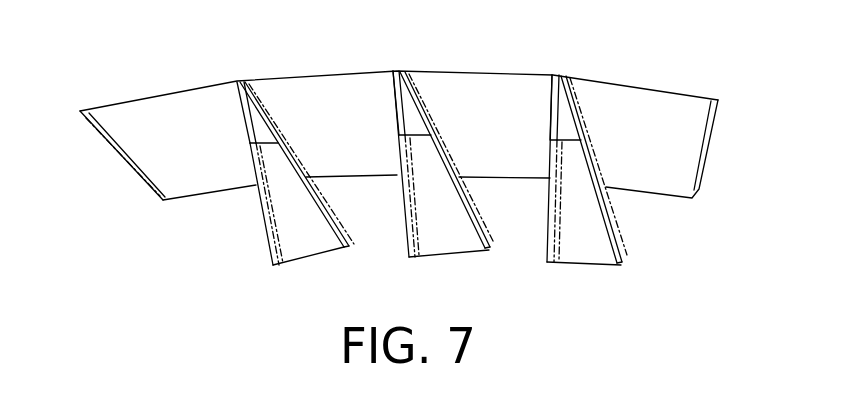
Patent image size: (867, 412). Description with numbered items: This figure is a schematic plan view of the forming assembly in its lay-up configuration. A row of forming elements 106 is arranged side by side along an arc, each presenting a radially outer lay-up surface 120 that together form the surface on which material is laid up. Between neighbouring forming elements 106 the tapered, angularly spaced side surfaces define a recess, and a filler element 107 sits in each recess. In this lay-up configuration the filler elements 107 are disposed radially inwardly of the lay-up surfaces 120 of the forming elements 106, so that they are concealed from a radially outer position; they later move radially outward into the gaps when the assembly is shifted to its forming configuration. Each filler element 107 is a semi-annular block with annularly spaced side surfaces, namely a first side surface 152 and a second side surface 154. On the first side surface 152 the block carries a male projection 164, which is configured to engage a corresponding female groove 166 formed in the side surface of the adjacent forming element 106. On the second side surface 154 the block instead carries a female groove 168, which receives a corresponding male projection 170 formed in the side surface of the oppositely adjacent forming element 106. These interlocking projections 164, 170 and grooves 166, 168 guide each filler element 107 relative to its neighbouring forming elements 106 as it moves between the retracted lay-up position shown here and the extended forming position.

The forming element 106 is at (165, 103).
The lay-up surface 120 is at (302, 76).
The male projection 170 is at (245, 125).
The female groove 166 is at (118, 156).
The male projection 164 is at (323, 195).
The second side surface 154 is at (250, 210).
The female groove 168 is at (270, 244).
The first side surface 152 is at (356, 230).
The filler element 107 is at (310, 251).